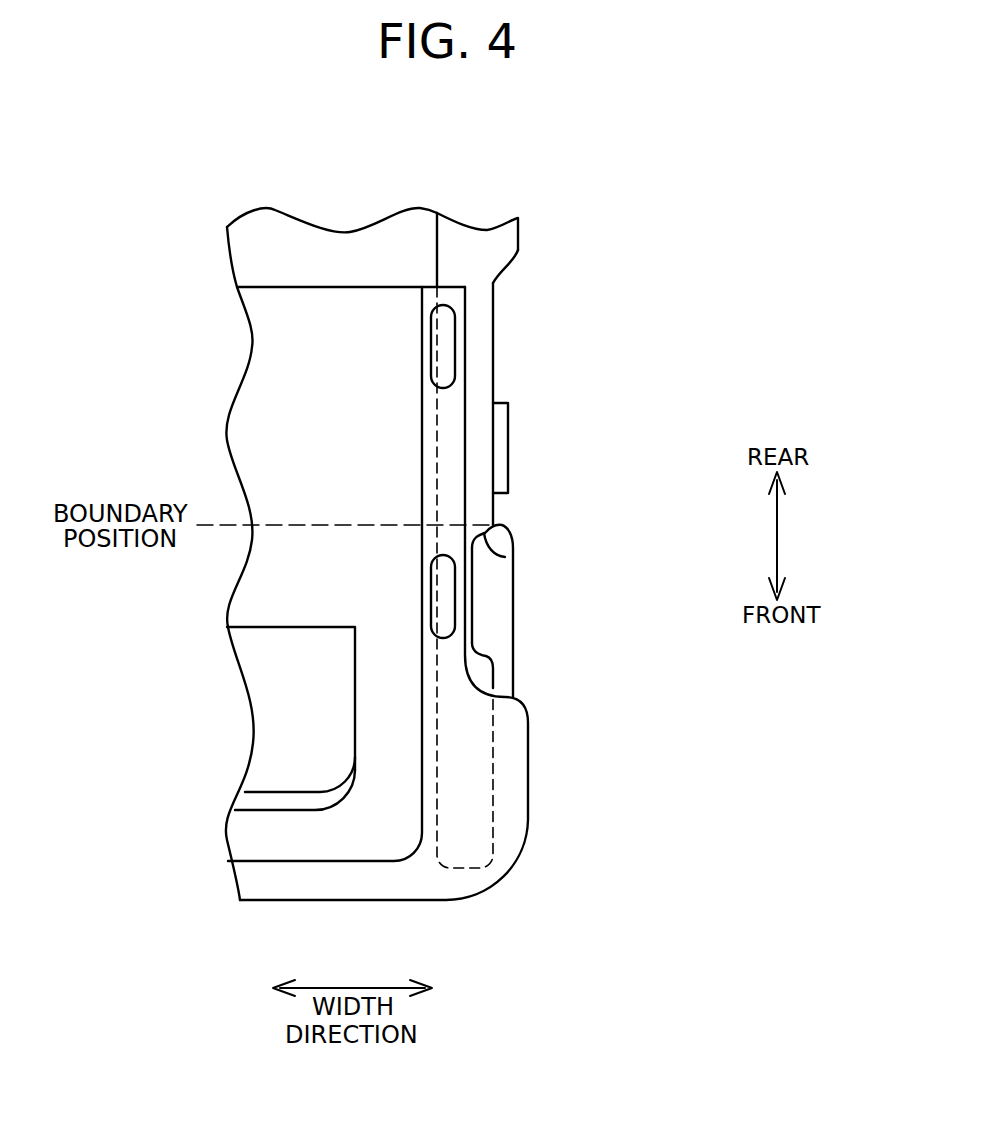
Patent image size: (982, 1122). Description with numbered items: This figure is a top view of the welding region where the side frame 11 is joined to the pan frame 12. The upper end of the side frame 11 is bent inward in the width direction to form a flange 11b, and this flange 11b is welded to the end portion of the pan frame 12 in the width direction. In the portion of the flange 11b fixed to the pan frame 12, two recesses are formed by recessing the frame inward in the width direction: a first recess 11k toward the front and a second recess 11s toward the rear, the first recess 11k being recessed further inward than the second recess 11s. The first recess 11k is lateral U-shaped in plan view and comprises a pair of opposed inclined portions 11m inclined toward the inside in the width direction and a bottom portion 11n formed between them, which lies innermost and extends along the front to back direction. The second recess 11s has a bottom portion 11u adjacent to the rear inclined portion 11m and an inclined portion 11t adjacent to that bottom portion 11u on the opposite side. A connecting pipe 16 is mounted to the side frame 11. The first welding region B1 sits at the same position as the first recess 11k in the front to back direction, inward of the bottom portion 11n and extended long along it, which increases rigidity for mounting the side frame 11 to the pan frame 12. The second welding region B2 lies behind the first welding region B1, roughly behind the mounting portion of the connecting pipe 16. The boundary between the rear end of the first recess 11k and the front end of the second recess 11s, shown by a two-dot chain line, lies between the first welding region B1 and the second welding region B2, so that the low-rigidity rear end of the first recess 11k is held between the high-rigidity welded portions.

The side frame 11 is at (530, 227).
The flange 11b is at (477, 282).
The inclined portion 11t is at (505, 273).
The bottom portion 11u is at (493, 353).
The second recess 11s is at (601, 387).
The connecting pipe 16 is at (503, 448).
The inclined portion 11m is at (505, 557).
The bottom portion 11n is at (470, 602).
The first recess 11k is at (586, 611).
The pan frame 12 is at (533, 842).
The first welding region B1 is at (443, 588).
The second welding region B2 is at (443, 347).